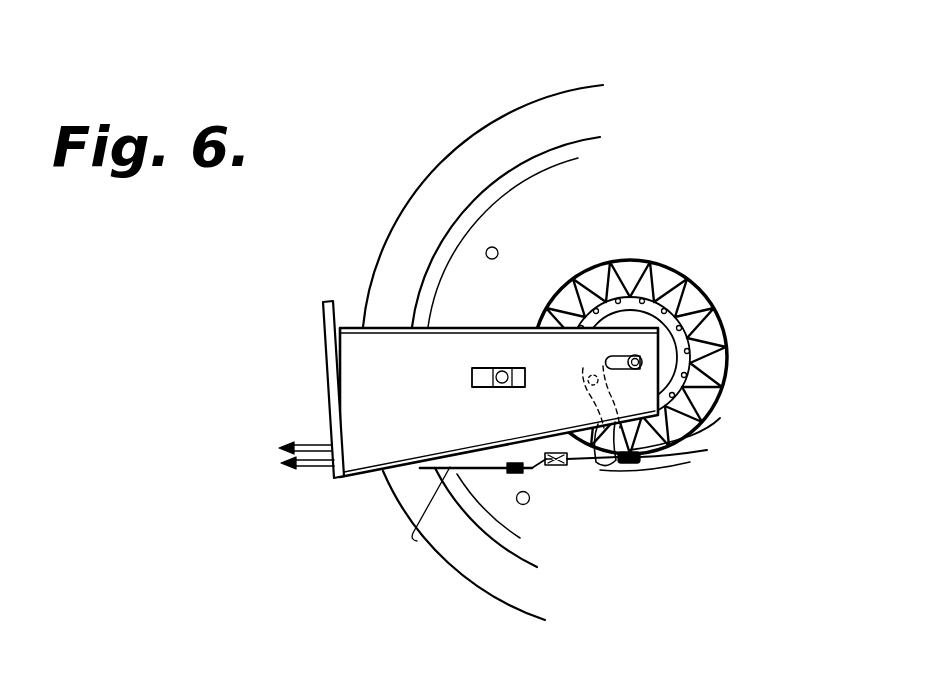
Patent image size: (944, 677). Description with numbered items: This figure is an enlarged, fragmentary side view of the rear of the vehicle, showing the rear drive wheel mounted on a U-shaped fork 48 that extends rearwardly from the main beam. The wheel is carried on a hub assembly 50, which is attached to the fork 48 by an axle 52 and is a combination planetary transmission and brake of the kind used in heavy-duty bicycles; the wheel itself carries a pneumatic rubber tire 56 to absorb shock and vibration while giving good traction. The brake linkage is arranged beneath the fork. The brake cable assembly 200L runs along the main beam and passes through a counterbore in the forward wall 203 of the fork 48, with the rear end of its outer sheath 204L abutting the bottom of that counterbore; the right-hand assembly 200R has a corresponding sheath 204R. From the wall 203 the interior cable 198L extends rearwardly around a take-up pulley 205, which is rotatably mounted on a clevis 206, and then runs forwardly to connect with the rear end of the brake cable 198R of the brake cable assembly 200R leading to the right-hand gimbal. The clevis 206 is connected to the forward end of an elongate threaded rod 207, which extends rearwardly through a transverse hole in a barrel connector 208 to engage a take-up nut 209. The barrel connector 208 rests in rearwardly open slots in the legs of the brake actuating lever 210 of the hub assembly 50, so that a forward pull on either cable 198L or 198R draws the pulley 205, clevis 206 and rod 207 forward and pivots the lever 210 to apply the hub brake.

The U-shaped fork 48 is at (352, 318).
The hub assembly 50 is at (672, 288).
The axle 52 is at (641, 358).
The pneumatic rubber tire 56 is at (508, 127).
The interior cable 198L is at (548, 466).
The brake cable 198R is at (459, 519).
The brake cable assembly 200L is at (279, 449).
The brake cable assembly 200R is at (283, 471).
The forward wall 203 is at (328, 336).
The outer sheath 204L is at (282, 445).
The right arrow linkage 204R is at (297, 471).
The take-up pulley 205 is at (498, 452).
The clevis 206 is at (557, 468).
The elongate threaded rod 207 is at (588, 468).
The barrel connector 208 is at (664, 449).
The take-up nut 209 is at (640, 462).
The brake actuating lever 210 is at (687, 438).